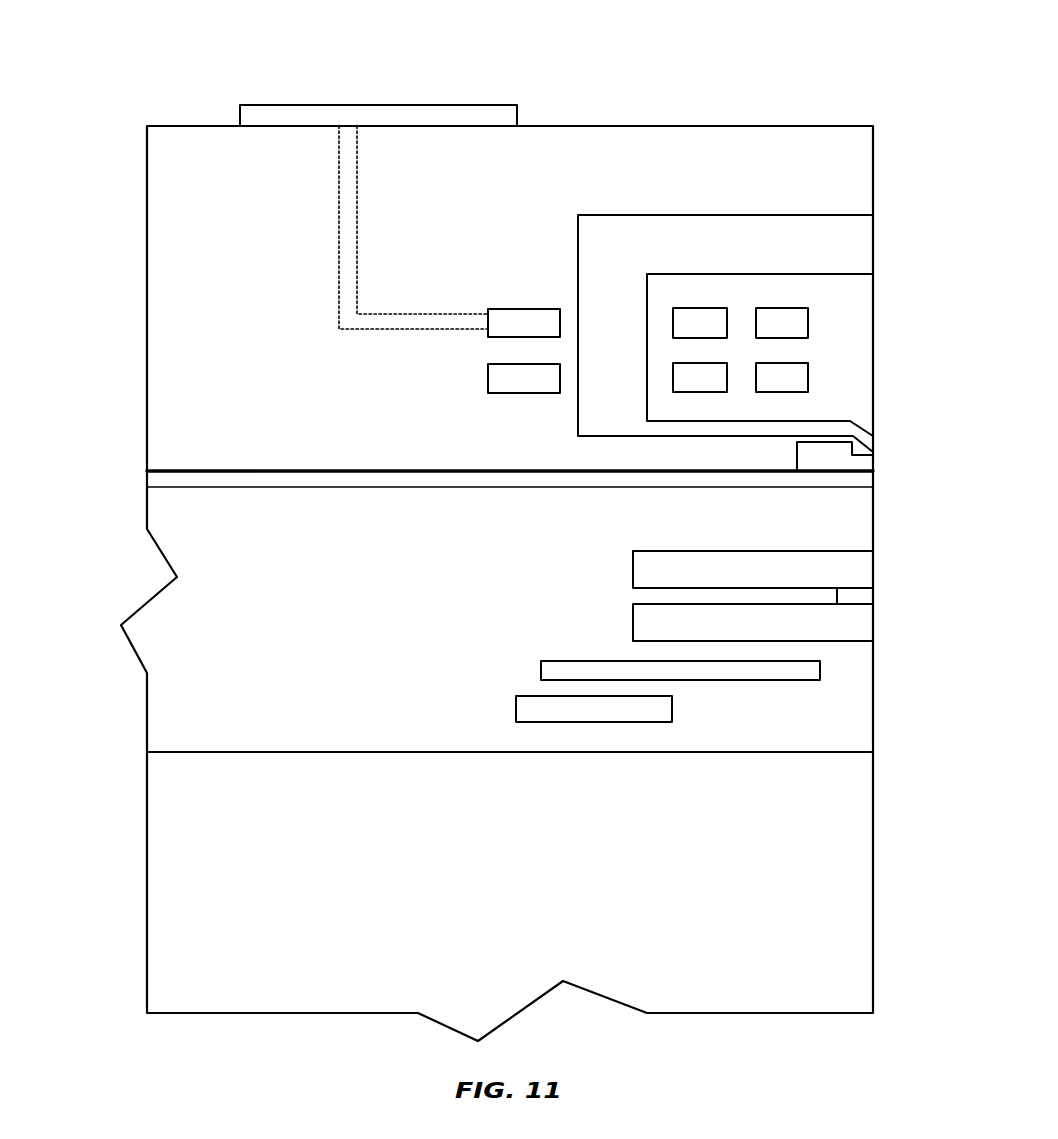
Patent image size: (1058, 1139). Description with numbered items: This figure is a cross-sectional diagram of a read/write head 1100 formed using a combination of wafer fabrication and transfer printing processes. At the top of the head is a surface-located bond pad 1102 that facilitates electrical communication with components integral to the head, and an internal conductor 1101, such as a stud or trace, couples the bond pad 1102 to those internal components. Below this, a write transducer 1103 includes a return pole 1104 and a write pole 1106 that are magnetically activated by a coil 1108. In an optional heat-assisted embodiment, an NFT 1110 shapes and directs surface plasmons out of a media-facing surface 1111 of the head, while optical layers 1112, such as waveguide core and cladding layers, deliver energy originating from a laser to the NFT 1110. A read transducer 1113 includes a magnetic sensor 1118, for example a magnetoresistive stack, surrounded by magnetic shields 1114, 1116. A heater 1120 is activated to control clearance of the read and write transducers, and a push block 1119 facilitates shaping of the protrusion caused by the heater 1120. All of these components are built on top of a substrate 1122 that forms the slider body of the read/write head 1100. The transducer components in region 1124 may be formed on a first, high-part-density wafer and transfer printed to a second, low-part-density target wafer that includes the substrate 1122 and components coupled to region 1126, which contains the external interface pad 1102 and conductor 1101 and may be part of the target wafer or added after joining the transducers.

The read/write head 1100 is at (635, 84).
The internal conductors 1101 is at (353, 183).
The bond pads 1102 is at (323, 104).
The write transducer 1103 is at (467, 220).
The return pole 1104 is at (860, 255).
The write pole 1106 is at (867, 443).
The coil 1108 is at (808, 323).
The NFT 1110 is at (867, 467).
The media-facing surface 1111 is at (878, 150).
The optical layers 1112 is at (867, 480).
The read transducer 1113 is at (594, 532).
The magnetic shield 1114 is at (865, 567).
The magnetic shield 1116 is at (867, 627).
The magnetic sensor 1118 is at (867, 592).
The push block 1119 is at (820, 667).
The heater 1120 is at (672, 710).
The substrate 1122 is at (162, 853).
The region 1124 is at (108, 213).
The region 1126 is at (116, 100).